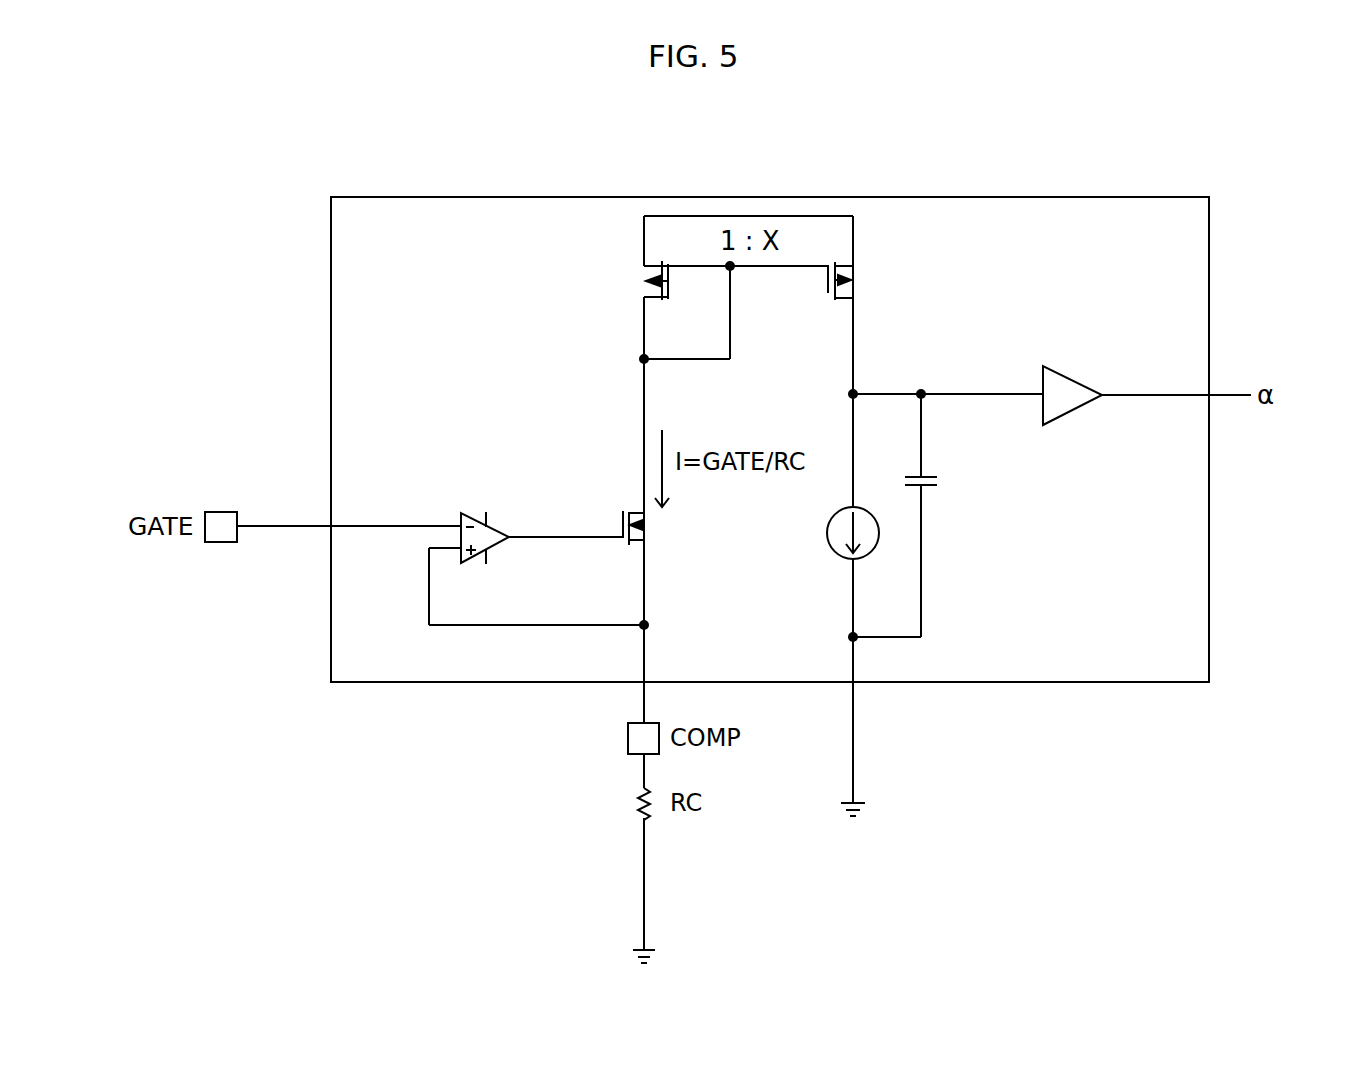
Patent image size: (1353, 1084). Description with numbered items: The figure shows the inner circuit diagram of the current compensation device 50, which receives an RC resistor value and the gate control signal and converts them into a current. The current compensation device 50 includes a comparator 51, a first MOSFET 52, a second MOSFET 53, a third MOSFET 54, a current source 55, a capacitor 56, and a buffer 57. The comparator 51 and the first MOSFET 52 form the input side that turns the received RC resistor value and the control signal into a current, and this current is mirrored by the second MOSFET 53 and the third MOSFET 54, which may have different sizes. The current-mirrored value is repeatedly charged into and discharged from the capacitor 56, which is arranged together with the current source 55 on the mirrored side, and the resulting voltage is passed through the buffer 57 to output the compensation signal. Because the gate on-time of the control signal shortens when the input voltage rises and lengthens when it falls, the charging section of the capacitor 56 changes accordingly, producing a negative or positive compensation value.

The current compensation device 50 is at (773, 197).
The comparator 51 is at (472, 512).
The first MOSFET 52 is at (627, 512).
The second MOSFET 53 is at (644, 264).
The third MOSFET 54 is at (853, 264).
The current source 55 is at (827, 533).
The capacitor 56 is at (930, 477).
The buffer 57 is at (1075, 378).